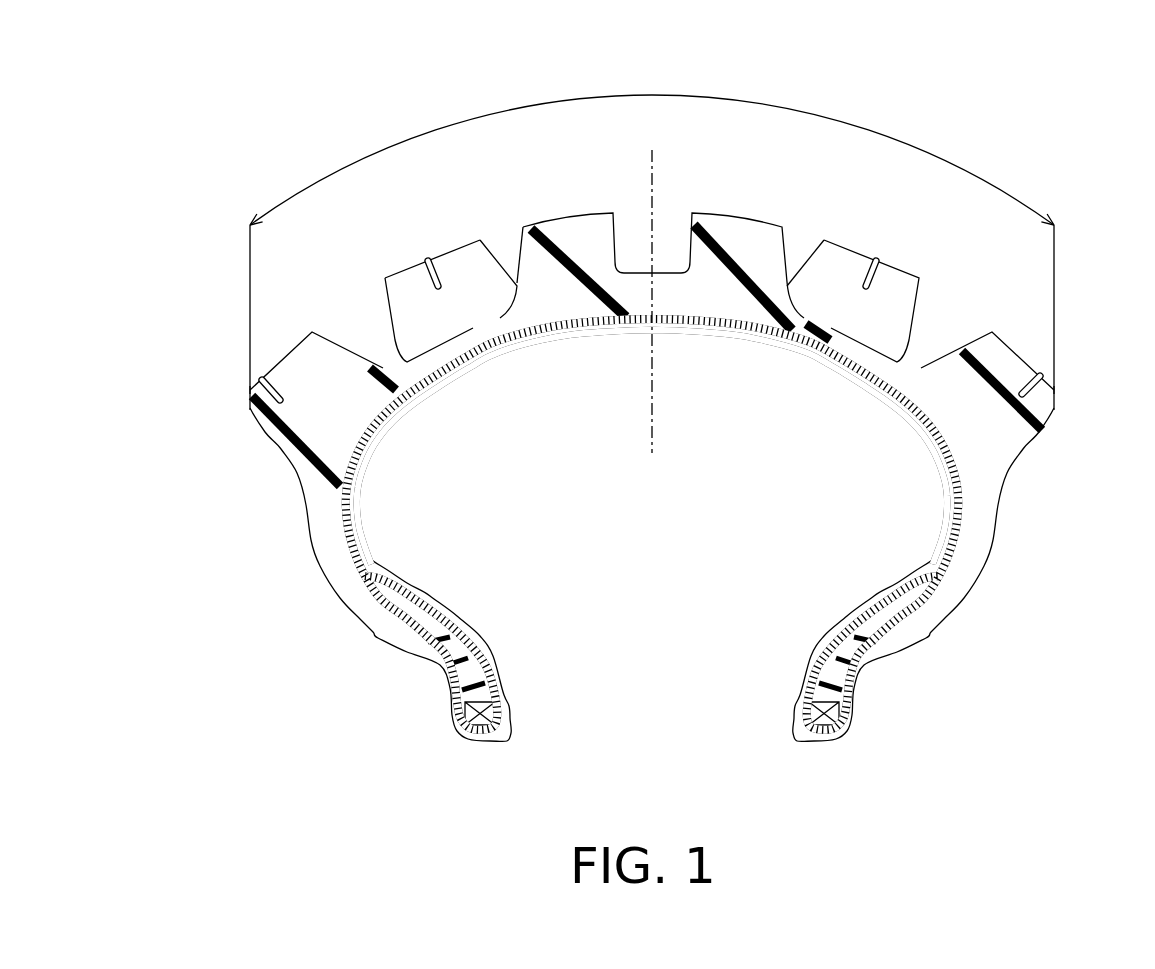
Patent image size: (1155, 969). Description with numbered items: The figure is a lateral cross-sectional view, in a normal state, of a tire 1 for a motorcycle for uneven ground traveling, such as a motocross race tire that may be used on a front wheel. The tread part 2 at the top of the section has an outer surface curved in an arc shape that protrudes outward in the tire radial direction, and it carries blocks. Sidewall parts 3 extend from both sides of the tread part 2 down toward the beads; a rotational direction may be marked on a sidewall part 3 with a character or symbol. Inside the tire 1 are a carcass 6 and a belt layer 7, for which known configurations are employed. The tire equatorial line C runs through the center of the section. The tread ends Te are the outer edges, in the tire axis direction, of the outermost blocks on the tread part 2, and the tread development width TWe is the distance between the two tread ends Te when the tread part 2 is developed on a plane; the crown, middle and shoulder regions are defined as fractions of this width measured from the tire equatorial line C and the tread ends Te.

The tire 1 is at (652, 400).
The tread part 2 is at (697, 205).
The sidewall part 3 is at (313, 582).
The carcass 6 is at (587, 330).
The belt layer 7 is at (716, 330).
The tread end Te is at (248, 390).
The tread development width TWe is at (652, 234).
The tire equatorial line C is at (652, 285).